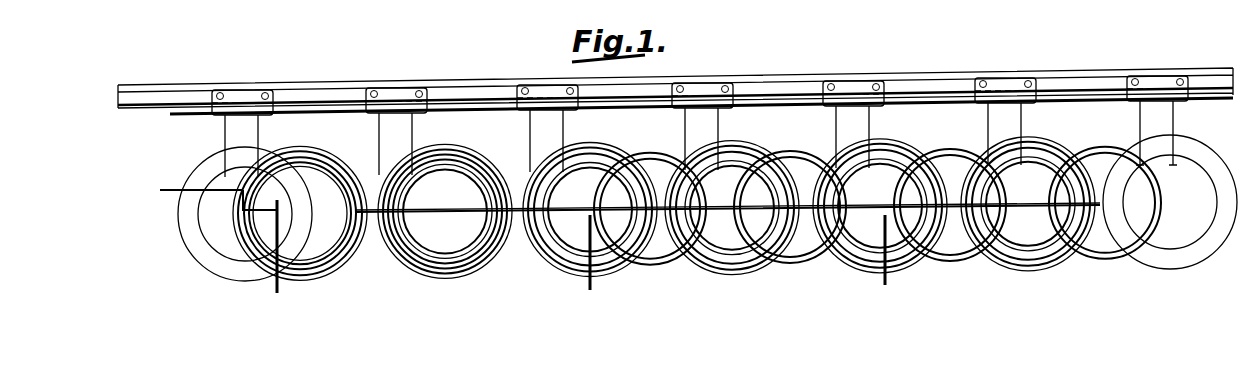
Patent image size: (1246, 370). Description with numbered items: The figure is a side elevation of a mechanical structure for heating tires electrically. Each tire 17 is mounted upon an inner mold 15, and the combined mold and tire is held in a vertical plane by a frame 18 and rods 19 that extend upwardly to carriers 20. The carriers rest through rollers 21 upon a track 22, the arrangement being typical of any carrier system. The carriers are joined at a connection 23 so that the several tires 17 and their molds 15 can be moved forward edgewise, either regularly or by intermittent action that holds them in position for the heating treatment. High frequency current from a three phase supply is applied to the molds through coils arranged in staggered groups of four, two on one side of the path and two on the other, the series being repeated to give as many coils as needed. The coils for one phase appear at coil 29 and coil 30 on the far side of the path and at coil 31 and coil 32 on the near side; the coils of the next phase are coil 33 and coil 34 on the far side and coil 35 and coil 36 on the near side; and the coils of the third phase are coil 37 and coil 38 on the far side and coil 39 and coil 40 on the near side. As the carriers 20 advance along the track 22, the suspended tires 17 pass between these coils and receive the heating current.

The mold 15 is at (205, 248).
The tire 17 is at (216, 270).
The frame 18 is at (1158, 182).
The rods 19 is at (380, 124).
The carriers 20 is at (248, 98).
The rollers 21 is at (268, 96).
The track 22 is at (348, 98).
The carrier connection 23 is at (470, 104).
The coil 29 is at (336, 146).
The coil 30 is at (470, 146).
The coil 31 is at (282, 280).
The coil 32 is at (440, 272).
The coil 33 is at (644, 270).
The coil 34 is at (786, 264).
The coil 35 is at (568, 272).
The coil 36 is at (726, 270).
The coil 37 is at (940, 252).
The coil 38 is at (1094, 258).
The coil 39 is at (890, 278).
The coil 40 is at (1032, 266).